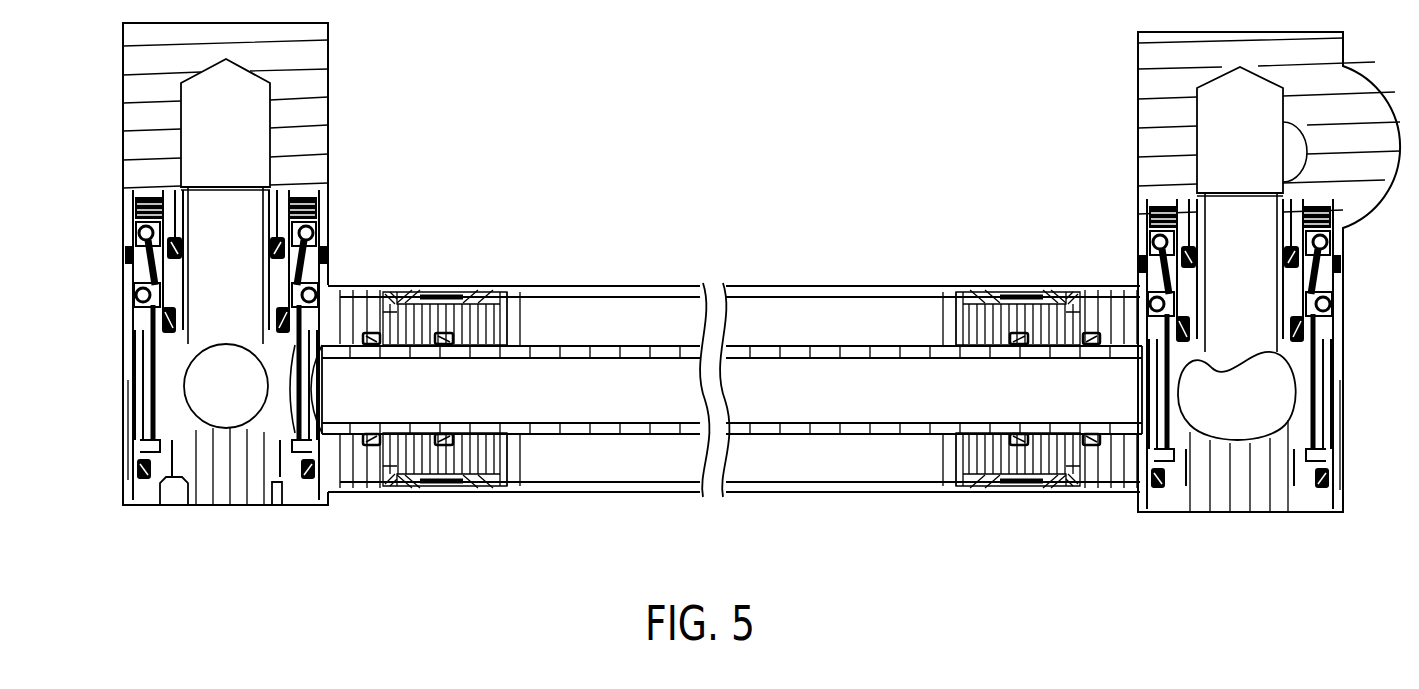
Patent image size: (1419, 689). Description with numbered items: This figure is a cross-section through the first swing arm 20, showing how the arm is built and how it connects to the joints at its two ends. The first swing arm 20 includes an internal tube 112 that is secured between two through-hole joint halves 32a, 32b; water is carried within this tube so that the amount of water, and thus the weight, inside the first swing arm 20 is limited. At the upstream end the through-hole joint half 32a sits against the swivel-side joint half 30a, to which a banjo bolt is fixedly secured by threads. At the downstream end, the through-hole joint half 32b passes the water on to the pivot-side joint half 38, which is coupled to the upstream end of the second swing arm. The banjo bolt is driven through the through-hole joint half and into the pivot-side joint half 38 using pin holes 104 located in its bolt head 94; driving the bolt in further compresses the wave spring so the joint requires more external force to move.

The pivot-side joint half 38 is at (315, 82).
The swivel-side joint half 30a is at (1355, 105).
The first swing arm 20 is at (815, 295).
The internal tube 112 is at (828, 358).
The through-hole joint half 32b is at (143, 381).
The through-hole joint half 32a is at (1325, 383).
The pin holes 104 is at (270, 497).
The bolt head 94 is at (300, 497).